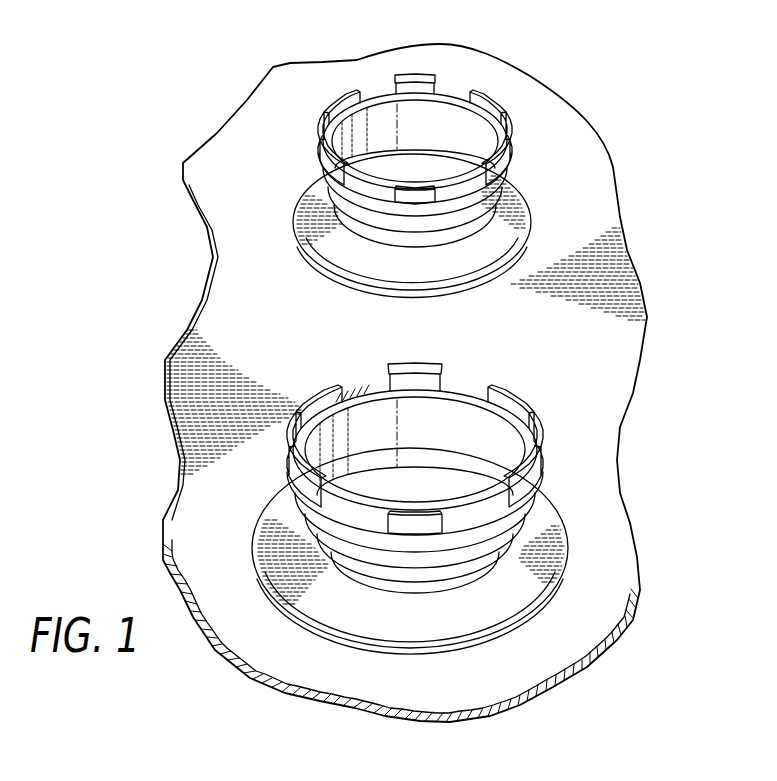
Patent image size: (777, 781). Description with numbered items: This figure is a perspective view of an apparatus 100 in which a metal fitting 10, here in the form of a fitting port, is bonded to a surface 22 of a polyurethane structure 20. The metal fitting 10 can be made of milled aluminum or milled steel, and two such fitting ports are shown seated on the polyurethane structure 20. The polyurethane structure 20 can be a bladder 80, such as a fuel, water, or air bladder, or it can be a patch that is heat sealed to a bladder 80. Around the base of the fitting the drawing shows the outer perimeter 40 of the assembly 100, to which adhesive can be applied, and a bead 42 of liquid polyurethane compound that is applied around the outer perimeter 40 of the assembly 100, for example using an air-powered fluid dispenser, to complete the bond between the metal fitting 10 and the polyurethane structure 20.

The apparatus 100 is at (178, 98).
The bladder 80 is at (577, 183).
The metal fitting 10 is at (545, 507).
The polyurethane structure 20 is at (578, 532).
The surface 22 is at (583, 555).
The outer perimeter 40 is at (553, 570).
The bead 42 is at (542, 603).